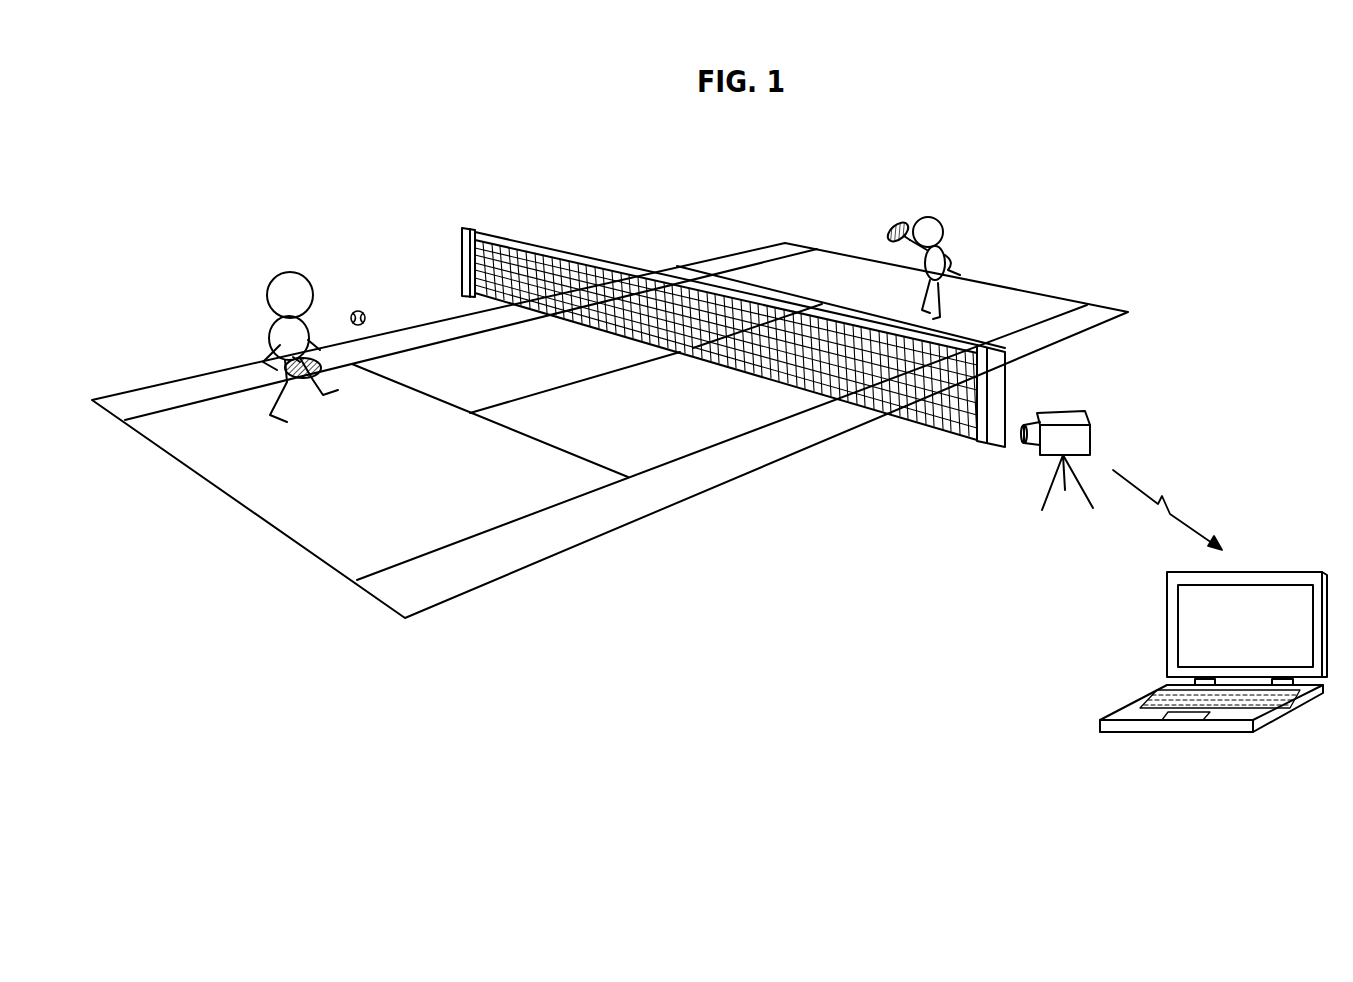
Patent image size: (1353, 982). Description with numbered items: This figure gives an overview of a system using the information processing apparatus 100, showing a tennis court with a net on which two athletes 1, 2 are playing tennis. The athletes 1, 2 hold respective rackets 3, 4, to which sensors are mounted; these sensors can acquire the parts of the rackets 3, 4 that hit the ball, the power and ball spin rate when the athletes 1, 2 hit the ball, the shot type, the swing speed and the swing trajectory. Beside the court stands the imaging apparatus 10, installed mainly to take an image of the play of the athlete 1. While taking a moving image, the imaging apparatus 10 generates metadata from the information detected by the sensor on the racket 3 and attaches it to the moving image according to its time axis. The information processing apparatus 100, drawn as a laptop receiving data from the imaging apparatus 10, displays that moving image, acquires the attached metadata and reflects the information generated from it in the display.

The athlete 1 is at (288, 272).
The athlete 2 is at (925, 212).
The racket 3 is at (305, 355).
The racket 4 is at (893, 222).
The imaging apparatus 10 is at (1092, 437).
The information processing apparatus 100 is at (1290, 572).